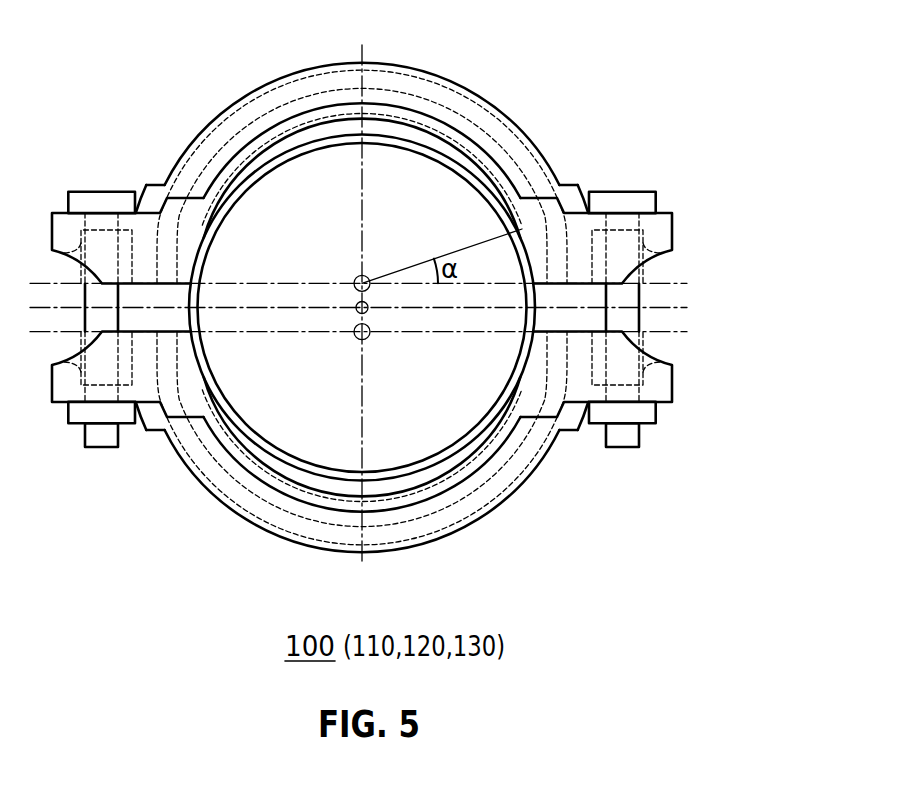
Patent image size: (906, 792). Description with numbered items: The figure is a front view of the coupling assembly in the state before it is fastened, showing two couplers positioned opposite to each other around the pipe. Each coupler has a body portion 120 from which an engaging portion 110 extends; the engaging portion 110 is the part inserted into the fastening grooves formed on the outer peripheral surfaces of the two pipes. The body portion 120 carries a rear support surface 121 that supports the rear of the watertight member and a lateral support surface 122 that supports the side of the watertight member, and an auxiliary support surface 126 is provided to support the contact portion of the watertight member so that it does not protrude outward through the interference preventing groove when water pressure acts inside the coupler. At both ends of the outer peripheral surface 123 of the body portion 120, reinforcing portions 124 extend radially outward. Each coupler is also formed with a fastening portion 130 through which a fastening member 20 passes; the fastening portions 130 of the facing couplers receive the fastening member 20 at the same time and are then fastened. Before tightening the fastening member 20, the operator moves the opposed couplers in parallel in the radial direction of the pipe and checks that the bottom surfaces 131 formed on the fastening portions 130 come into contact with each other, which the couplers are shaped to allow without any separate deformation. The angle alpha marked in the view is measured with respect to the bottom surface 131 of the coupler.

The fastening member 20 is at (101, 195).
The engaging portion 110 is at (402, 108).
The body portion 120 is at (392, 310).
The rear support surface 121 is at (497, 145).
The lateral support surface 122 is at (552, 382).
The outer peripheral surface 123 is at (503, 115).
The reinforcing portion 124 is at (565, 183).
The auxiliary support surface 126 is at (516, 370).
The fastening portion 130 is at (417, 324).
The bottom surface 131 is at (582, 331).